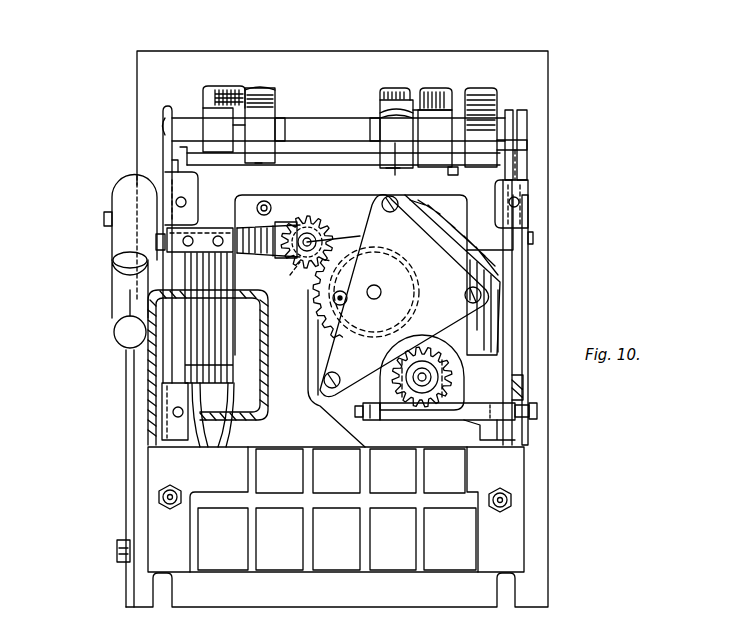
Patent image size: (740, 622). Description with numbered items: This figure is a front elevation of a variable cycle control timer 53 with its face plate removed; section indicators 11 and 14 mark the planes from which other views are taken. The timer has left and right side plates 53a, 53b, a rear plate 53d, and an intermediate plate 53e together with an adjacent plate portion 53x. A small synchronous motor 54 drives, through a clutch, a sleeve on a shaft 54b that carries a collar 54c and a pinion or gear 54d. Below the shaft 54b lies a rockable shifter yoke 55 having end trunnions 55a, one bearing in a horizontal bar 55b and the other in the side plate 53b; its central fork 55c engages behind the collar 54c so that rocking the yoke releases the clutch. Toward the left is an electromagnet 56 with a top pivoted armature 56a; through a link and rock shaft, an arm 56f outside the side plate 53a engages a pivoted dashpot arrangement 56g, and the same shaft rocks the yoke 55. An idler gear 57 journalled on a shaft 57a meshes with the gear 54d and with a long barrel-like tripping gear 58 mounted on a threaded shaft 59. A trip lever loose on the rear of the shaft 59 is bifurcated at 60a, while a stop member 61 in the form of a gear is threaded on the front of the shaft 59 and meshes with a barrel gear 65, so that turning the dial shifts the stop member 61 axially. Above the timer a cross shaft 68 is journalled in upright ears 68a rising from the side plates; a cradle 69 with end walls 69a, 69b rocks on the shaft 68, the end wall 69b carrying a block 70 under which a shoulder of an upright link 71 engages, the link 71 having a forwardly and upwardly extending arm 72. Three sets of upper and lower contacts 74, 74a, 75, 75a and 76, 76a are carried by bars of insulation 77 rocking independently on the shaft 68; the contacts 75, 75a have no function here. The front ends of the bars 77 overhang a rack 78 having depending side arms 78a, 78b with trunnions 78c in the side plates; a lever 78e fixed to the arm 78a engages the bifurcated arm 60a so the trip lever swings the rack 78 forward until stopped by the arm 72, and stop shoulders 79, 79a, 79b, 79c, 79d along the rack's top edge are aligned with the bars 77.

The section line 11 is at (397, 68).
The frame plate 14 is at (490, 73).
The base frame 53 is at (336, 509).
The left hand side plate 53a is at (163, 163).
The right hand side plate 53b is at (530, 262).
The rear plate 53d is at (137, 70).
The intermediate plate 53e is at (320, 343).
The plate edge 53x is at (310, 366).
The synchronous motor 54 is at (422, 377).
The shaft 54b is at (412, 385).
The collar 54c is at (440, 372).
The pinion or gear 54d is at (395, 366).
The rockable shifter yoke 55 is at (455, 422).
The end trunnions 55a is at (370, 415).
The horizontal bar 55b is at (341, 406).
The fork 55c is at (440, 388).
The electromagnet 56 is at (152, 380).
The armature 56a is at (195, 346).
The arm 56f is at (126, 475).
The dashpot arrangement 56g is at (112, 303).
The idler gear 57 is at (412, 305).
The shaft 57a is at (380, 290).
The tripping gear 58 is at (313, 298).
The threaded shaft 59 is at (322, 243).
The bifurcated arm 60a is at (290, 262).
The stop member 61 is at (322, 228).
The barrel gear 65 is at (372, 329).
The cross shaft 68 is at (305, 122).
The upright ears 68a is at (165, 110).
The cradle 69 is at (315, 153).
The end wall 69a is at (178, 105).
The end wall 69b is at (512, 129).
The block 70 is at (500, 152).
The upright link 71 is at (505, 345).
The arm 72 is at (515, 167).
The upper contact 74 is at (218, 96).
The lower contact 74a is at (235, 108).
The upper contact 75 is at (382, 100).
The lower contact 75a is at (398, 108).
The upper contact 76 is at (425, 92).
The lower contact 76a is at (455, 100).
The bar of insulation 77 is at (244, 125).
The rack 78 is at (279, 241).
The side arm 78a is at (213, 211).
The side arm 78b is at (428, 228).
The trunnion 78c is at (155, 241).
The lever 78e is at (262, 255).
The stop shoulder 79 is at (218, 162).
The stop shoulder 79a is at (260, 163).
The stop shoulder 79b is at (392, 165).
The stop shoulder 79c is at (437, 165).
The stop shoulder 79d is at (472, 165).